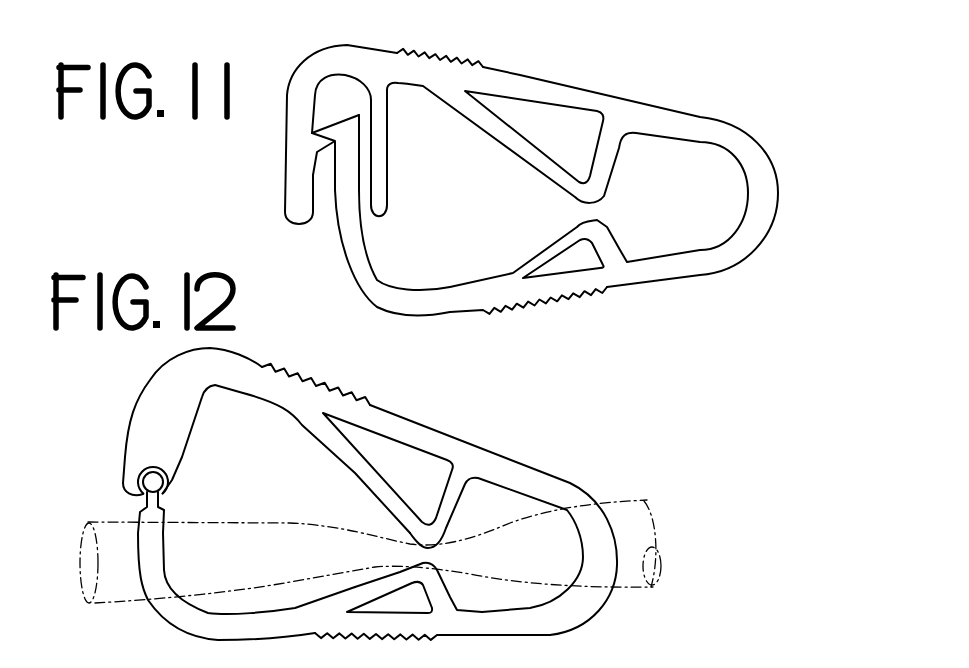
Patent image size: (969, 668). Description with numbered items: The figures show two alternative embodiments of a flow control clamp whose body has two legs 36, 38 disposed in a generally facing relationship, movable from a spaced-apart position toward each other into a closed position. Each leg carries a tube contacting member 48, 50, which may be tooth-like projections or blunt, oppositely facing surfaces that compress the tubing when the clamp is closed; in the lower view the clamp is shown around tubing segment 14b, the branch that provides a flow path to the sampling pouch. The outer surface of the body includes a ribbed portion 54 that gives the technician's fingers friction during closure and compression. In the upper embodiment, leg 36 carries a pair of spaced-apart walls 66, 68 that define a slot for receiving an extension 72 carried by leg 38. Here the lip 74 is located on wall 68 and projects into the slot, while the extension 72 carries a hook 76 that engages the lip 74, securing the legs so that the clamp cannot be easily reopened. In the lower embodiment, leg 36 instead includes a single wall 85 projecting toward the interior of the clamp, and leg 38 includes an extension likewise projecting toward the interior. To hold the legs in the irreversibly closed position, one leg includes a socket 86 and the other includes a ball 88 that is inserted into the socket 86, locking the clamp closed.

In FIG. 12, the tubing segment 14b is at (647, 500).
In FIG. 11, the leg 36 is at (688, 112).
In FIG. 12, the leg 36 is at (568, 485).
In FIG. 11, the leg 38 is at (713, 276).
In FIG. 12, the leg 38 is at (533, 637).
In FIG. 12, the tube contacting member 48 is at (364, 486).
In FIG. 12, the tube contacting member 50 is at (443, 590).
In FIG. 11, the ribbed portion 54 is at (480, 67).
In FIG. 12, the ribbed portion 54 is at (350, 393).
In FIG. 11, the wall 66 is at (381, 190).
In FIG. 11, the wall 68 is at (290, 140).
In FIG. 12, the extension 72 is at (232, 627).
In FIG. 11, the lip 74 is at (323, 215).
In FIG. 11, the hook 76 is at (335, 141).
In FIG. 12, the single wall 85 is at (162, 392).
In FIG. 12, the socket 86 is at (162, 473).
In FIG. 12, the ball 88 is at (142, 517).